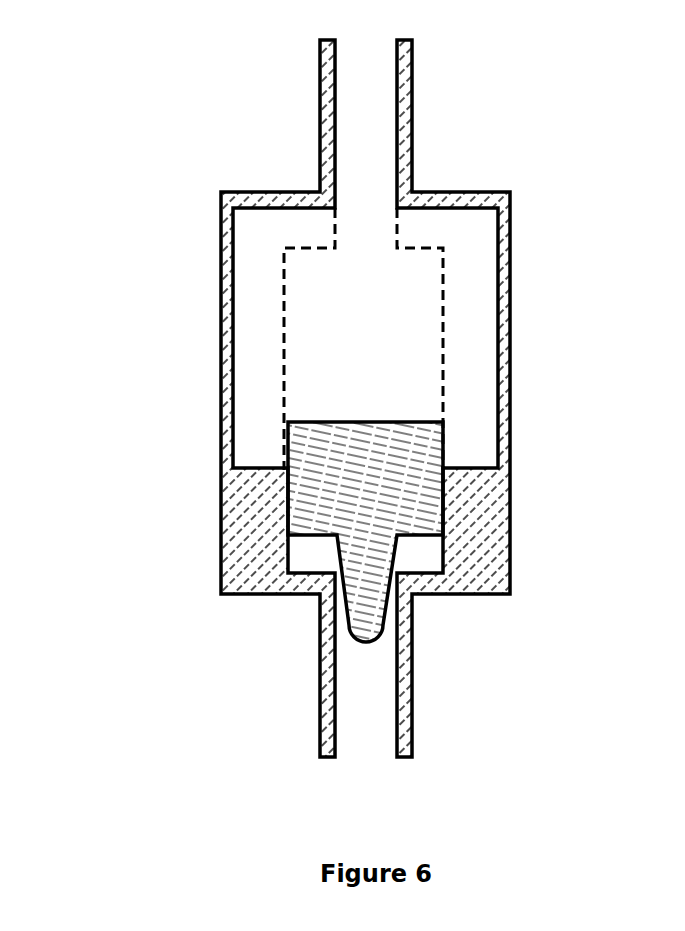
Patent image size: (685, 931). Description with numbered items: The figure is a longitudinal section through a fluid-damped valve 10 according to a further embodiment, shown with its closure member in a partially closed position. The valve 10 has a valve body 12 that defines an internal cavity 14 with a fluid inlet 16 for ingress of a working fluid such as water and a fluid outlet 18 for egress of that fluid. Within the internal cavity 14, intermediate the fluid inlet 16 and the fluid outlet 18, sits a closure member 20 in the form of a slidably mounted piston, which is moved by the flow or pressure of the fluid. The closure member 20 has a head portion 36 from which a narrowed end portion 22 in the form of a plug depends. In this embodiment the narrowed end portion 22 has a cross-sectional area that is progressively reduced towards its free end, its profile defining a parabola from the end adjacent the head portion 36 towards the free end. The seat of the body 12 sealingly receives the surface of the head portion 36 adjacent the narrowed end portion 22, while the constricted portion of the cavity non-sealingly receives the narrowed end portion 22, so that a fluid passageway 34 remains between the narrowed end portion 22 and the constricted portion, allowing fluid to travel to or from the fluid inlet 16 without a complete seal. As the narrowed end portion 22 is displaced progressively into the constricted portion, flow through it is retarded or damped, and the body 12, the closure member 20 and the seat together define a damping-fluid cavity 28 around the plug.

The fluid-damped valve 10 is at (225, 135).
The valve body 12 is at (220, 240).
The internal cavity 14 is at (381, 352).
The fluid inlet 16 is at (381, 756).
The fluid outlet 18 is at (381, 134).
The closure member 20 is at (303, 458).
The narrowed end portion 22 is at (412, 630).
The damping-fluid cavity 28 is at (300, 558).
The fluid passageway 34 is at (340, 623).
The head portion 36 is at (417, 482).